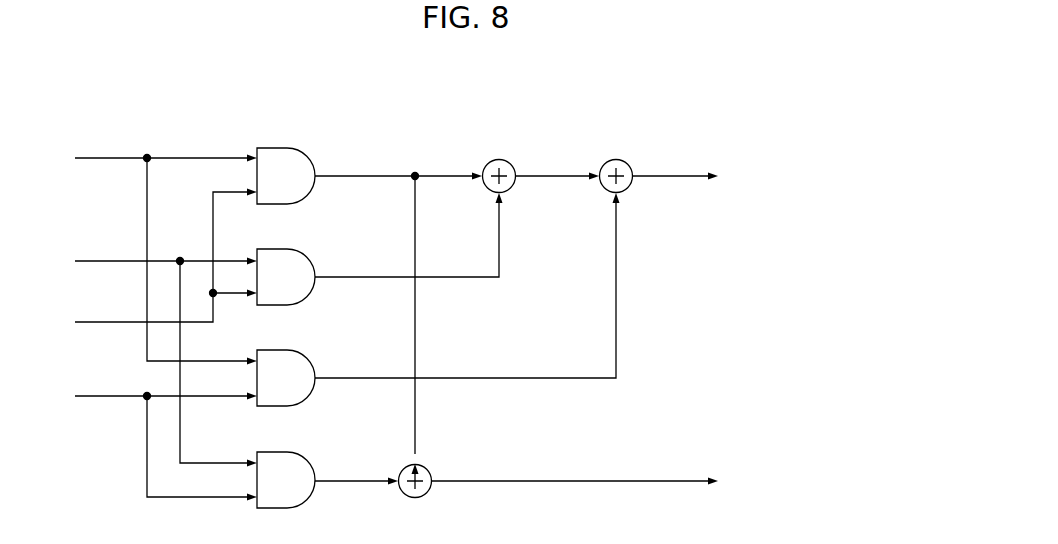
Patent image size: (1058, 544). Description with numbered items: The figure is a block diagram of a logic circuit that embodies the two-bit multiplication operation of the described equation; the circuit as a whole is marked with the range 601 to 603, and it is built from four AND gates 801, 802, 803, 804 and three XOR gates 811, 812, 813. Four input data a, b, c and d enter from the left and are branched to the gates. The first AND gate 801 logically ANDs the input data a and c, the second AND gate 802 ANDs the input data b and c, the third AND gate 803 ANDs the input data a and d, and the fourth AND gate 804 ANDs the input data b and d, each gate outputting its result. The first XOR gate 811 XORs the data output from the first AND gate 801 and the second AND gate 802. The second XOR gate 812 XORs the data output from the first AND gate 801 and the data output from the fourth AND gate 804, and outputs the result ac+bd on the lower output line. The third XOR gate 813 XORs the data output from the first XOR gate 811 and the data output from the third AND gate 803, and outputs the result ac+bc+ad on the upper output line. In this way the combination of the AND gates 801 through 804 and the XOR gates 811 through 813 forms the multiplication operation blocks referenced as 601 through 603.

The multiplier unit 601 is at (472, 289).
The multiplier unit 603 is at (757, 131).
The first AND gate 801 is at (288, 147).
The second AND gate 802 is at (288, 248).
The third AND gate 803 is at (288, 349).
The fourth AND gate 804 is at (288, 451).
The first XOR gate 811 is at (509, 161).
The second XOR gate 812 is at (428, 467).
The third XOR gate 813 is at (626, 161).